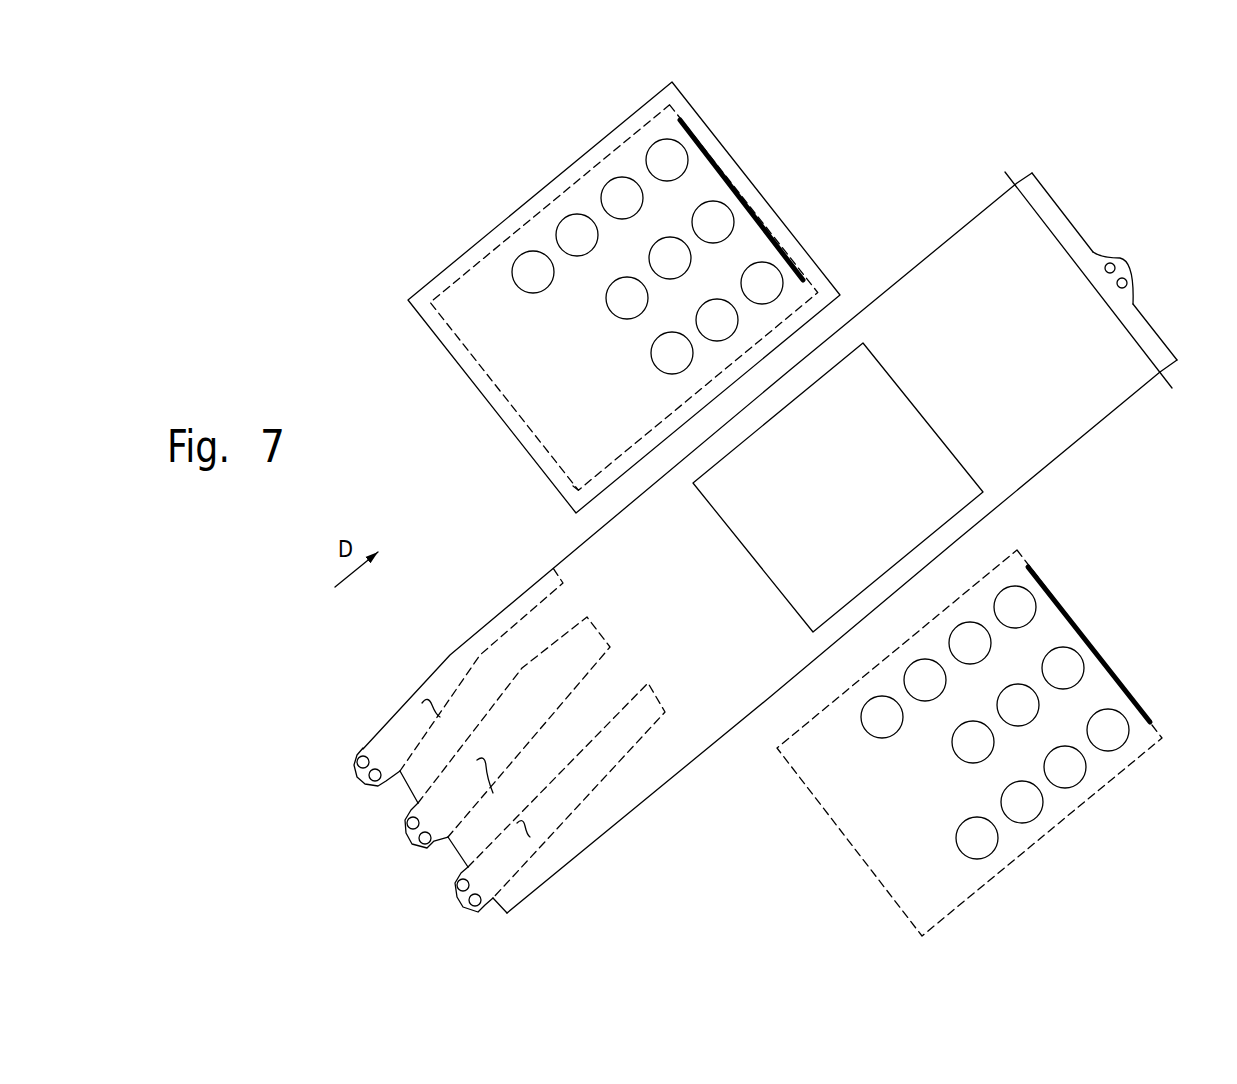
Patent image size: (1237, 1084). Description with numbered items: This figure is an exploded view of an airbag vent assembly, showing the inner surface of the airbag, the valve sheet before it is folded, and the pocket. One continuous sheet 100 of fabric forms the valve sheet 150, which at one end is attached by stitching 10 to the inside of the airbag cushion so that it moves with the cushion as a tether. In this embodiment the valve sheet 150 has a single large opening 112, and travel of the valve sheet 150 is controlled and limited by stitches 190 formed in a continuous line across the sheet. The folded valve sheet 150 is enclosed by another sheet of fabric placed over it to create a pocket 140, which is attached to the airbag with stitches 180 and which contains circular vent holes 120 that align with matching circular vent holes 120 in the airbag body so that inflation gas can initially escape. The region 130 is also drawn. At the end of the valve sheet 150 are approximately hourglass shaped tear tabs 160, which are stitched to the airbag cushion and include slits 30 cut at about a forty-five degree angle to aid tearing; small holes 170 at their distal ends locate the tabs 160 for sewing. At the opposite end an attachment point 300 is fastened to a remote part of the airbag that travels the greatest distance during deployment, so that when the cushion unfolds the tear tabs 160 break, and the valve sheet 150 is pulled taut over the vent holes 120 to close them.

The stitching 10 is at (1153, 343).
The slits 30 is at (558, 855).
The sheet 100 is at (1108, 410).
The single large opening 112 is at (752, 563).
The circular vent holes 120 is at (571, 229).
The second region (dashed) 130 is at (1073, 815).
The pocket 140 is at (525, 371).
The valve sheet 150 is at (428, 651).
The tear tabs 160 is at (385, 730).
The small holes 170 is at (343, 760).
The stitches 180 is at (572, 490).
The stitches 190 is at (750, 202).
The attachment point 300 is at (1131, 261).